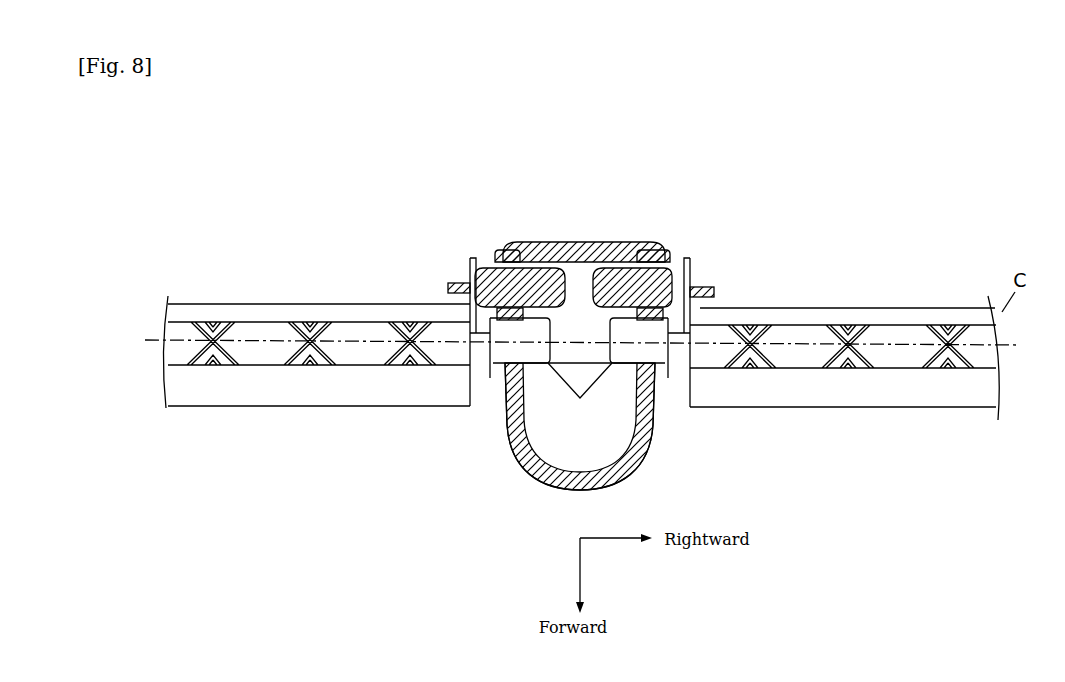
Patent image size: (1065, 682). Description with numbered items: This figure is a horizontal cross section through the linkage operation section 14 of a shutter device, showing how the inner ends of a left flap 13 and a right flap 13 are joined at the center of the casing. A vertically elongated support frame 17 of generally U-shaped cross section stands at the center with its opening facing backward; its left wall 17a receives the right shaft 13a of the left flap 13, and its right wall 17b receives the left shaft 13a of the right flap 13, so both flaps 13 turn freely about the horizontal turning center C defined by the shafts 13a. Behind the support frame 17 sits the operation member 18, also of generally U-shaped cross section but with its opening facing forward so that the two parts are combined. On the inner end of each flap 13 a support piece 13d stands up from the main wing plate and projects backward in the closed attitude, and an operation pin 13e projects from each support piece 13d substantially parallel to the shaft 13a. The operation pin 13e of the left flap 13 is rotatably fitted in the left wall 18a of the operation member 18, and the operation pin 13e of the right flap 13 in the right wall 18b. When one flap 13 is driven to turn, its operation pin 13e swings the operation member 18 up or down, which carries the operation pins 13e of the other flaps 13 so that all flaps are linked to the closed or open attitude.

The flap 13 is at (299, 296).
The shaft 13a is at (580, 394).
The support piece 13d is at (468, 277).
The operation pin 13e is at (535, 242).
The linkage operation section 14 is at (587, 213).
The support frame 17 is at (573, 463).
The left wall of support frame 17a is at (510, 433).
The right wall of support frame 17b is at (642, 418).
The operation member 18 is at (580, 224).
The left wall of operation member 18a is at (503, 252).
The right wall of operation member 18b is at (664, 248).